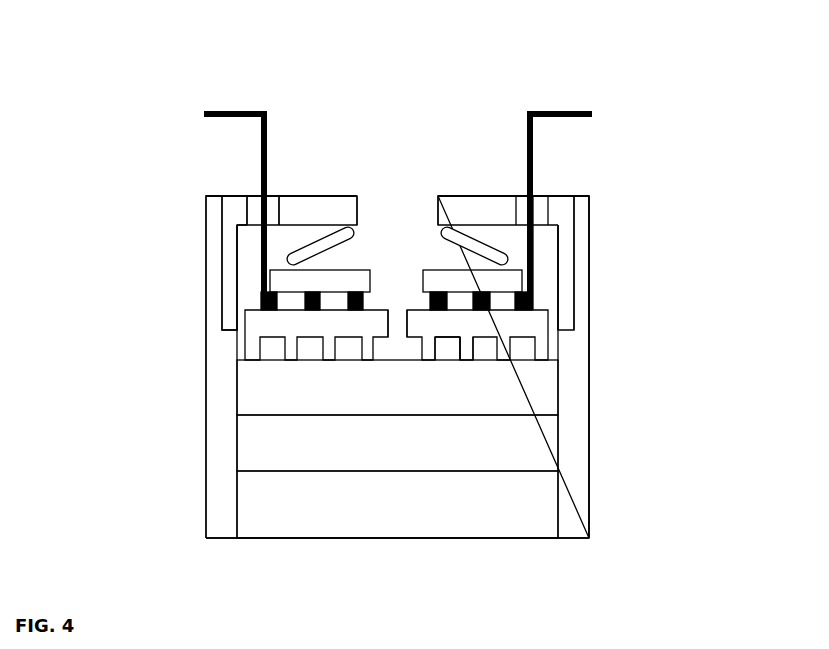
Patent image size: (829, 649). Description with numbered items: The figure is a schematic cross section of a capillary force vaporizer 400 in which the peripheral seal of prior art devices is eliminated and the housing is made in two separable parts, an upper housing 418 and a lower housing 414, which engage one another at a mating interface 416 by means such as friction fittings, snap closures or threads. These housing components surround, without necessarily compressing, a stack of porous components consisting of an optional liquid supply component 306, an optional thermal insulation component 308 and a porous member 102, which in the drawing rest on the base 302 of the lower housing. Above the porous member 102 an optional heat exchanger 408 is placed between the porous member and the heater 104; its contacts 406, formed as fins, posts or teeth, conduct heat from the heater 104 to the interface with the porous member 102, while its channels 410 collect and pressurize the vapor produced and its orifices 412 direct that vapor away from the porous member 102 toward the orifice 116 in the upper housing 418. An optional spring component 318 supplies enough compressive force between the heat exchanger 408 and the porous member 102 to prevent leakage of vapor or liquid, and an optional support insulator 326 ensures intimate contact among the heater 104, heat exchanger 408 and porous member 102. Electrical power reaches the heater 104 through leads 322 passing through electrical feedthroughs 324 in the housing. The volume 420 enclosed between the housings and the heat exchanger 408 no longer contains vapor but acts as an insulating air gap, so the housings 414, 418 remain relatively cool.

The capillary force vaporizer 400 is at (107, 58).
The porous member 102 is at (270, 382).
The heater 104 is at (481, 312).
The orifice 116 is at (398, 215).
The substrate 302 is at (433, 540).
The liquid supply component 306 is at (270, 487).
The thermal insulation component 308 is at (270, 432).
The spring component 318 is at (310, 255).
The leads 322 is at (534, 172).
The electrical feedthroughs 324 is at (255, 212).
The support insulator 326 is at (295, 283).
The contacts 406 is at (447, 350).
The heat exchanger 408 is at (272, 327).
The channels 410 is at (467, 350).
The orifices 412 is at (398, 318).
The lower housing 414 is at (576, 350).
The mating interface 416 is at (576, 303).
The upper housing 418 is at (478, 212).
The volume 420 is at (548, 262).